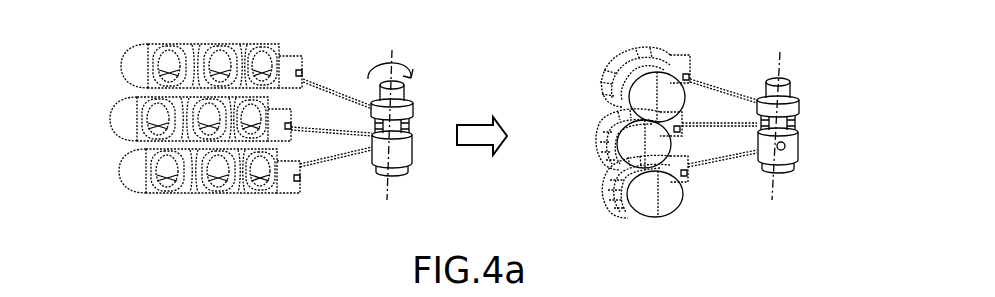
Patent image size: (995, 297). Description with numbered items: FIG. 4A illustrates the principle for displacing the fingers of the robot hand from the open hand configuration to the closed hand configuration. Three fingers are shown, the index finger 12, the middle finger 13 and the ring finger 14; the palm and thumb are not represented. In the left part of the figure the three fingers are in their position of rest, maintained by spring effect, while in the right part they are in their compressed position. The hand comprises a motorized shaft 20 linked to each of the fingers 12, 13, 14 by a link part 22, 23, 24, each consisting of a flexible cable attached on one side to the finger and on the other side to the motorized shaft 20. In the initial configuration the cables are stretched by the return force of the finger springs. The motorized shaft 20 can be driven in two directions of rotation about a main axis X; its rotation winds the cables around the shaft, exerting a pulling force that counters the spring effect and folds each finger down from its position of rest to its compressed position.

The index finger 12 is at (130, 62).
The middle finger 13 is at (122, 123).
The ring finger 14 is at (128, 178).
The motorized shaft 20 is at (404, 162).
The link part 22 is at (338, 95).
The link part 23 is at (321, 132).
The link part 24 is at (351, 157).
The main axis X is at (394, 52).